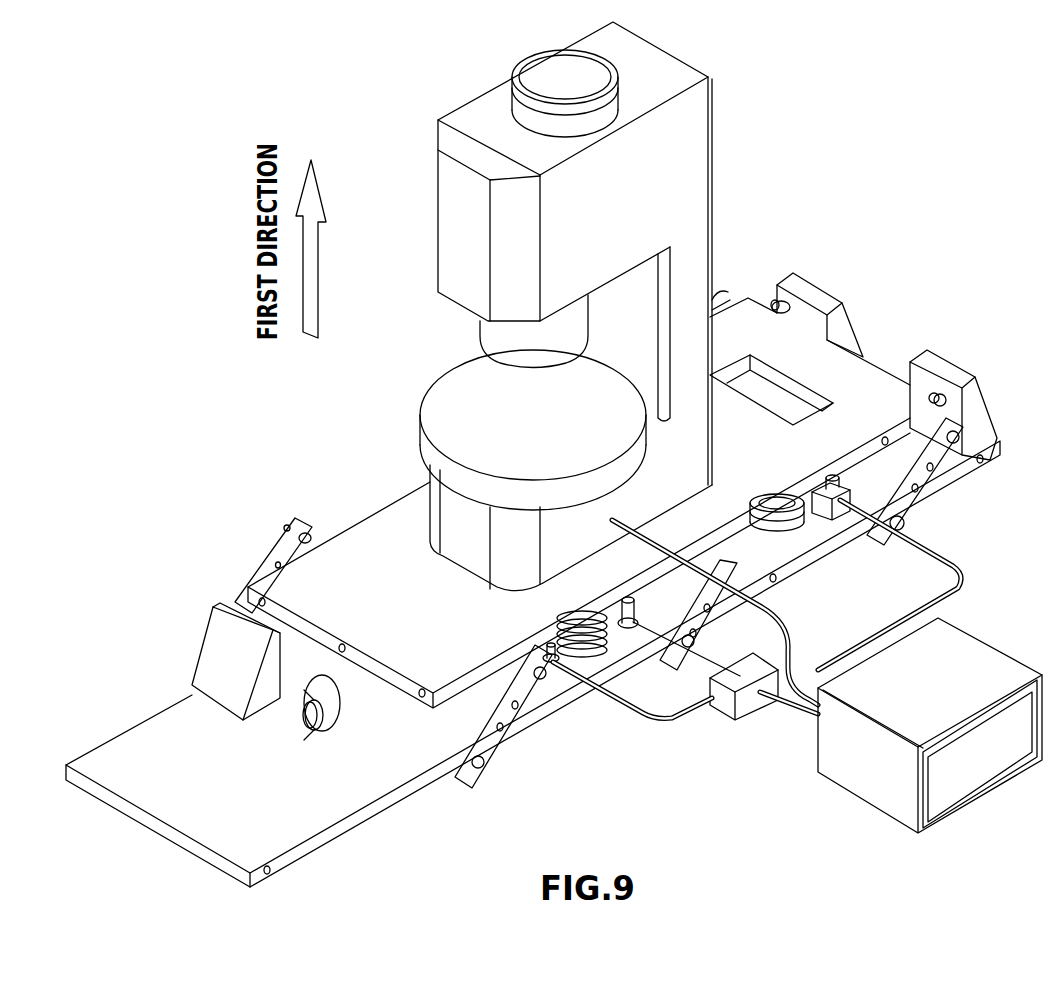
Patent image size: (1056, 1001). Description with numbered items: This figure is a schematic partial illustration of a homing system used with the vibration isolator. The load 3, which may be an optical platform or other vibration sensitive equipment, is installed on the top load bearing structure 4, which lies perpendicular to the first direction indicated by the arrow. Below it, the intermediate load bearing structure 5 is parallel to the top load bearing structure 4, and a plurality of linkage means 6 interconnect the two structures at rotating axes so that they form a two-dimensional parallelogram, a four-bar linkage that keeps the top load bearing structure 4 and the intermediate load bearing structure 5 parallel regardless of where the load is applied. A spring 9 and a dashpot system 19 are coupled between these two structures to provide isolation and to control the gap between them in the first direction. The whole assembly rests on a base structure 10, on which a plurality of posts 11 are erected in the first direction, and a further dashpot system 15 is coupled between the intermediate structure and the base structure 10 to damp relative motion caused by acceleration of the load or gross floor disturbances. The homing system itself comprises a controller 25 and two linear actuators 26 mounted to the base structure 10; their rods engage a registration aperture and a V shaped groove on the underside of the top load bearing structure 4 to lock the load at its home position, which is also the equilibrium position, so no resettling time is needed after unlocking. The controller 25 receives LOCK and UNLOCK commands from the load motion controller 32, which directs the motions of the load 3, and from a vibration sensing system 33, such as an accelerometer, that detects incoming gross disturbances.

The load 3 is at (457, 215).
The top load bearing structure 4 is at (348, 558).
The intermediate load bearing structure 5 is at (812, 515).
The linkage means 6 is at (277, 555).
The spring 9 is at (590, 635).
The base structure 10 is at (140, 752).
The posts 11 is at (220, 653).
The dashpot system 15 is at (310, 718).
The dashpot system 19 is at (782, 528).
The controller 25 is at (750, 703).
The linear actuators 26 is at (552, 660).
The load motion controller 32 is at (975, 652).
The vibration sensing system 33 is at (823, 500).